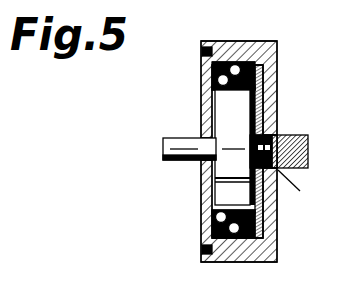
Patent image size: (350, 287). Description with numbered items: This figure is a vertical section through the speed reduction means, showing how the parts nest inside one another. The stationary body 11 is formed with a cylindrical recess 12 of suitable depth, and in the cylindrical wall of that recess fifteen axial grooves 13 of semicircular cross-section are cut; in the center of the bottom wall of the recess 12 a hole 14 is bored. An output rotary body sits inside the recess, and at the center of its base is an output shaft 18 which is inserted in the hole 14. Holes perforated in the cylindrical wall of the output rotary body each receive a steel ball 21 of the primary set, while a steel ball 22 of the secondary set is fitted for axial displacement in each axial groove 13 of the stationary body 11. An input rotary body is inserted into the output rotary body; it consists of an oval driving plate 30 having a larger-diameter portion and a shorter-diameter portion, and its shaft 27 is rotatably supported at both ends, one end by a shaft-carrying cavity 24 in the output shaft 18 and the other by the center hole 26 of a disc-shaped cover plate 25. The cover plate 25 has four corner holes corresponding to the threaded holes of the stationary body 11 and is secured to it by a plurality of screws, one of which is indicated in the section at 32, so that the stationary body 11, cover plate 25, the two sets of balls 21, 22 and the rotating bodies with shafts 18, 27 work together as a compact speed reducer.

The stationary body 11 is at (278, 46).
The cylindrical recess 12 is at (277, 62).
The axial groove 13 is at (250, 64).
The hole 14 is at (299, 186).
The output shaft 18 is at (304, 134).
The steel ball (primary set) 21 is at (212, 85).
The steel ball (secondary set) 22 is at (234, 64).
The shaft-carrying cavity 24 is at (272, 135).
The cover plate 25 is at (212, 222).
The center hole 26 is at (208, 138).
The shaft 27 is at (163, 138).
The oval driving plate 30 is at (213, 192).
The retaining screw 32 is at (202, 52).